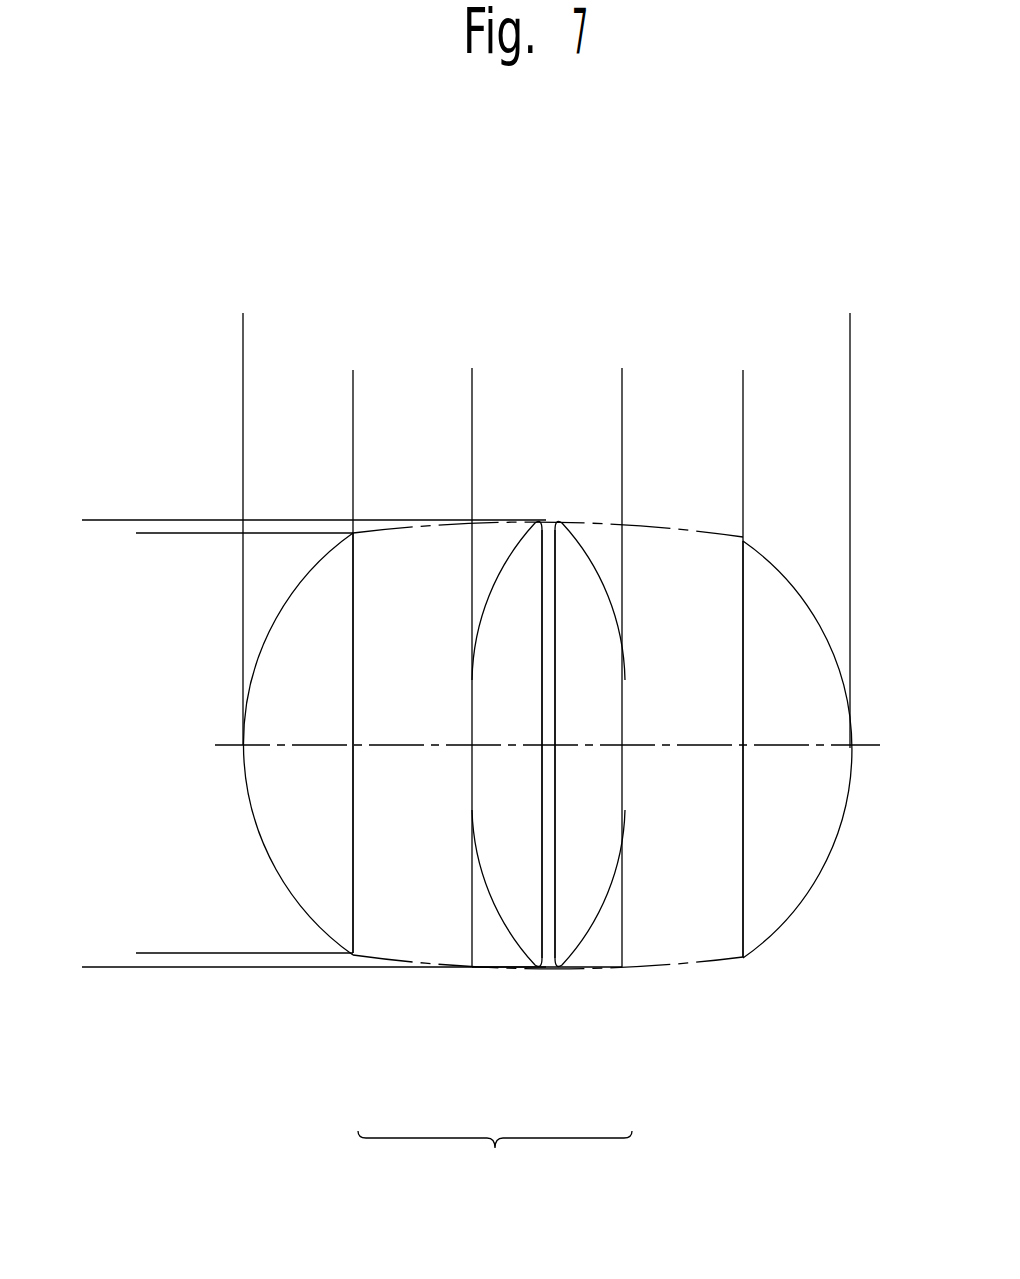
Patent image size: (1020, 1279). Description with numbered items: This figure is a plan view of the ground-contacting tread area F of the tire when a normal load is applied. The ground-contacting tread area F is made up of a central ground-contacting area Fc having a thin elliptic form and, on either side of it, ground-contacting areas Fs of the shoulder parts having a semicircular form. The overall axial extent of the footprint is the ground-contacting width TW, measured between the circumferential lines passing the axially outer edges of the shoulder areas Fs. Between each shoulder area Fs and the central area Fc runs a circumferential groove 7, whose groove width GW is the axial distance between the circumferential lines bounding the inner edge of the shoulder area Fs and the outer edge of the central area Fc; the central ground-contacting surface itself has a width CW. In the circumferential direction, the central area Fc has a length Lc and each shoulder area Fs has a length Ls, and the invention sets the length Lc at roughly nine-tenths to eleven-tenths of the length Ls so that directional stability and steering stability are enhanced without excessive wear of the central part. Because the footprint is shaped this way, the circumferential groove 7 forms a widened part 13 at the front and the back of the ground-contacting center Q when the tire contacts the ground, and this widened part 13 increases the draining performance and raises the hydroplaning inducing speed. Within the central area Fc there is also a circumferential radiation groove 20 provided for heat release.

The circumferential groove 7 is at (401, 827).
The widened part 13 is at (496, 931).
The circumferential radiation groove 20 is at (550, 590).
The ground-contacting center Q is at (863, 747).
The ground-contacting width TW is at (850, 323).
The groove width GW is at (472, 381).
The width of the central ground-contacting surface CW is at (622, 381).
The length of the ground-contacting area Fc Lc is at (93, 520).
The length of the ground-contacting area Fs Ls is at (147, 533).
The ground-contacting tread area F is at (495, 1162).
The ground-contacting area of the shoulder parts Fs is at (350, 877).
The ground-contacting area of the central part Fc is at (519, 956).